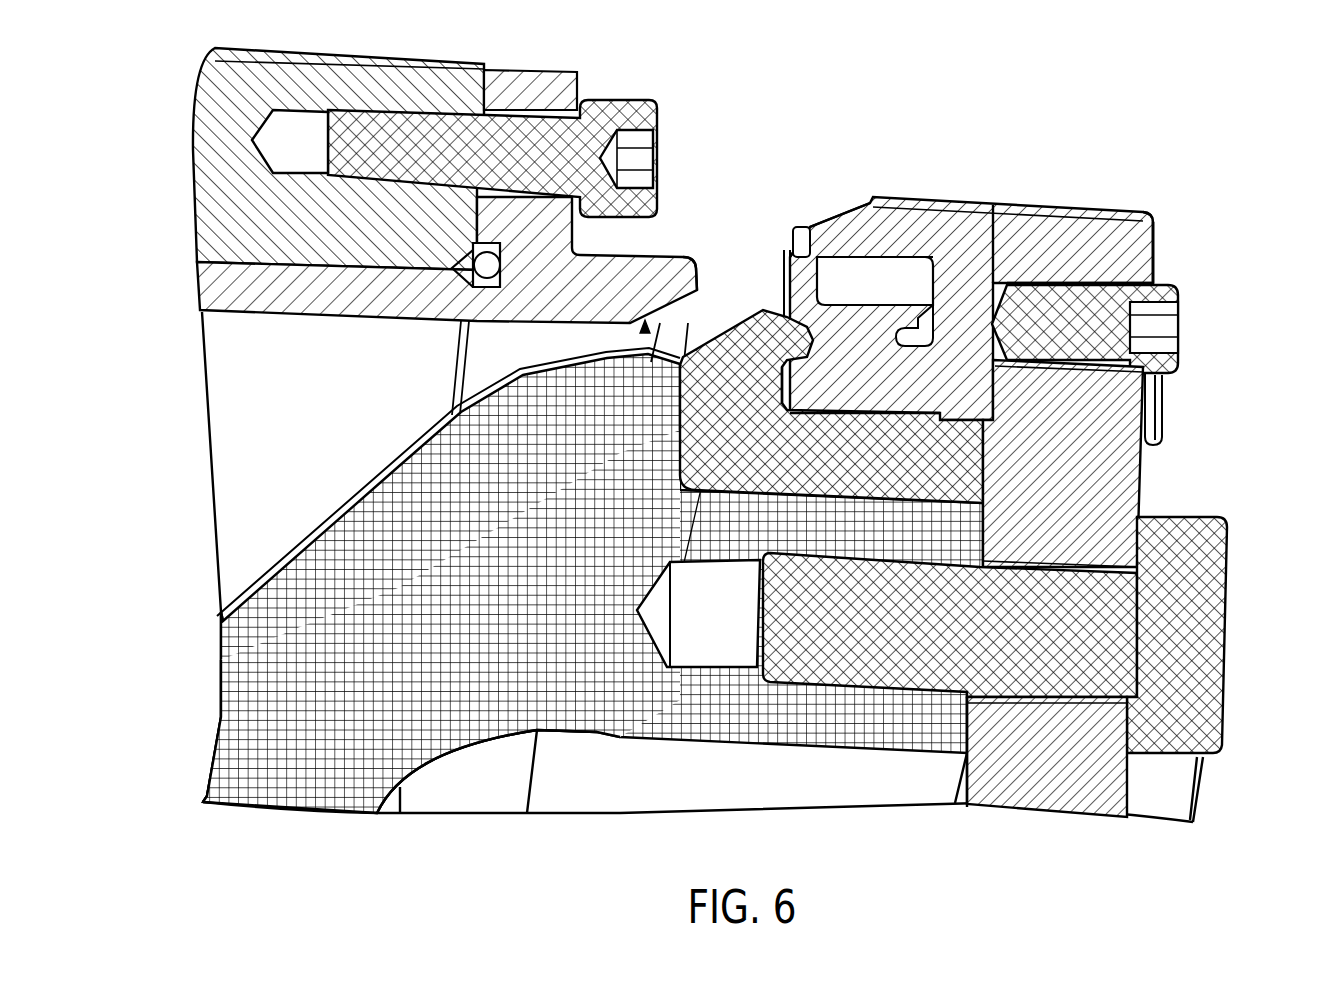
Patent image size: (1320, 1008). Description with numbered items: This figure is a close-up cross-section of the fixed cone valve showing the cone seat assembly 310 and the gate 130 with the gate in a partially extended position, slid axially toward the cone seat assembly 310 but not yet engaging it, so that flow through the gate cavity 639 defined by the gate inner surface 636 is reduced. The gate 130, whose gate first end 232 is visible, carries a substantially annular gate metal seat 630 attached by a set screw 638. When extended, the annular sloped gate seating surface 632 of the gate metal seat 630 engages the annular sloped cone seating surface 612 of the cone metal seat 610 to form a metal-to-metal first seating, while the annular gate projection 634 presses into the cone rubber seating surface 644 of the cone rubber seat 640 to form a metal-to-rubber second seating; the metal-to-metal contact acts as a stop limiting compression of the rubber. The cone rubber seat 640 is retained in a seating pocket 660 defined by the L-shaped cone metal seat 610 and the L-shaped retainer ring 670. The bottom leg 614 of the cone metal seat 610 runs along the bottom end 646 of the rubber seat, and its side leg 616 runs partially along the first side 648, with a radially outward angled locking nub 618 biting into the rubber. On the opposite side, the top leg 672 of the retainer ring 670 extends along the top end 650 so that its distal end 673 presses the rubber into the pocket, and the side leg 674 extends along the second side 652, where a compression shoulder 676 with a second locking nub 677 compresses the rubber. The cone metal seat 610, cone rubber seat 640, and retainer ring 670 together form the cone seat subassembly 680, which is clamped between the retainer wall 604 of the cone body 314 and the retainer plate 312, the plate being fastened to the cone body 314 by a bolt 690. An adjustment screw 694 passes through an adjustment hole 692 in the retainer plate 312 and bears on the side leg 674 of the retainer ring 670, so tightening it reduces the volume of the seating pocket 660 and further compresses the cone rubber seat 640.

The gate 130 is at (278, 77).
The set screw 638 is at (500, 150).
The gate metal seat 630 is at (533, 233).
The annular gate projection 634 is at (683, 260).
The gate inner surface 636 is at (217, 348).
The gate cavity 639 is at (248, 490).
The side leg 616 is at (686, 412).
The cone body 314 is at (397, 623).
The retainer wall 604 is at (773, 320).
The locking nub 618 is at (730, 563).
The gate first end 232 is at (692, 320).
The annular sloped gate seating surface 632 is at (643, 325).
The retainer ring 670 is at (957, 240).
The compression shoulder 676 is at (1010, 253).
The side leg 674 is at (1057, 250).
The distal end 673 is at (805, 300).
The top end 650 is at (862, 270).
The top leg 672 is at (890, 233).
The second locking nub 677 is at (908, 326).
The first side 648 is at (807, 227).
The cone rubber seating surface 644 is at (778, 290).
The annular sloped cone seating surface 612 is at (723, 327).
The second side 652 is at (905, 340).
The bottom end 646 is at (895, 407).
The adjustment screw 694 is at (1103, 337).
The adjustment hole 692 is at (1127, 287).
The retainer plate 312 is at (1123, 493).
The cone rubber seat 640 is at (873, 370).
The seating pocket 660 is at (815, 445).
The bolt 690 is at (1200, 650).
The bottom leg 614 is at (927, 475).
The cone metal seat 610 is at (848, 470).
The cone seat subassembly 680 is at (828, 158).
The cone seat assembly 310 is at (1165, 170).